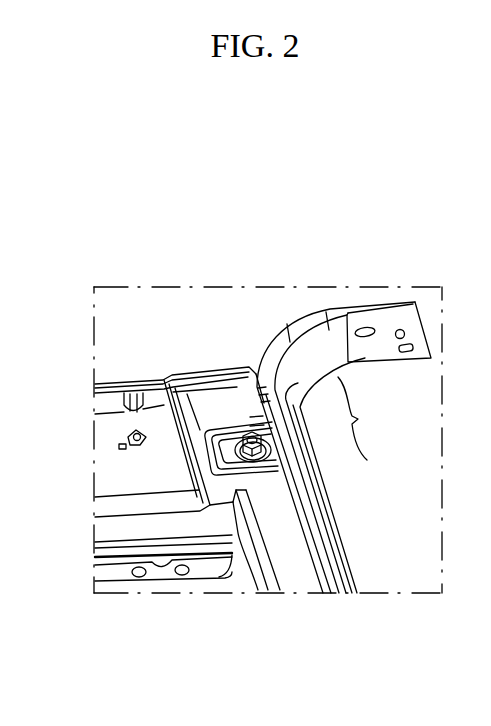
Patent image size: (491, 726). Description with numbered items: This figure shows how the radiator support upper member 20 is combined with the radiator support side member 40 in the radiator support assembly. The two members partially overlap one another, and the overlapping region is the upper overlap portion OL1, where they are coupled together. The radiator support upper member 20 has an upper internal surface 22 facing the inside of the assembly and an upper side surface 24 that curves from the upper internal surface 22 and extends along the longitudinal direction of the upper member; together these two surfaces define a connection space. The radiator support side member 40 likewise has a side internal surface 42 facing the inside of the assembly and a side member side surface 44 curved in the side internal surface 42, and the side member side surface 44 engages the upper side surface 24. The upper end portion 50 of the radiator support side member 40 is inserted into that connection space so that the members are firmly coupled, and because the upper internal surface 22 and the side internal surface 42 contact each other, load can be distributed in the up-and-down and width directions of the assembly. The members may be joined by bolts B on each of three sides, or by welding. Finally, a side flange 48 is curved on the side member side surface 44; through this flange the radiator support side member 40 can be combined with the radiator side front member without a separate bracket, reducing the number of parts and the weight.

The radiator support upper member 20 is at (167, 365).
The upper internal surface 22 is at (118, 530).
The upper side surface 24 is at (232, 387).
The bolt B is at (240, 448).
The radiator support side member 40 is at (337, 489).
The side internal surface 42 is at (255, 572).
The side member side surface 44 is at (303, 580).
The side flange 48 is at (333, 560).
The upper end portion 50 is at (259, 382).
The upper overlap portion OL1 is at (363, 418).